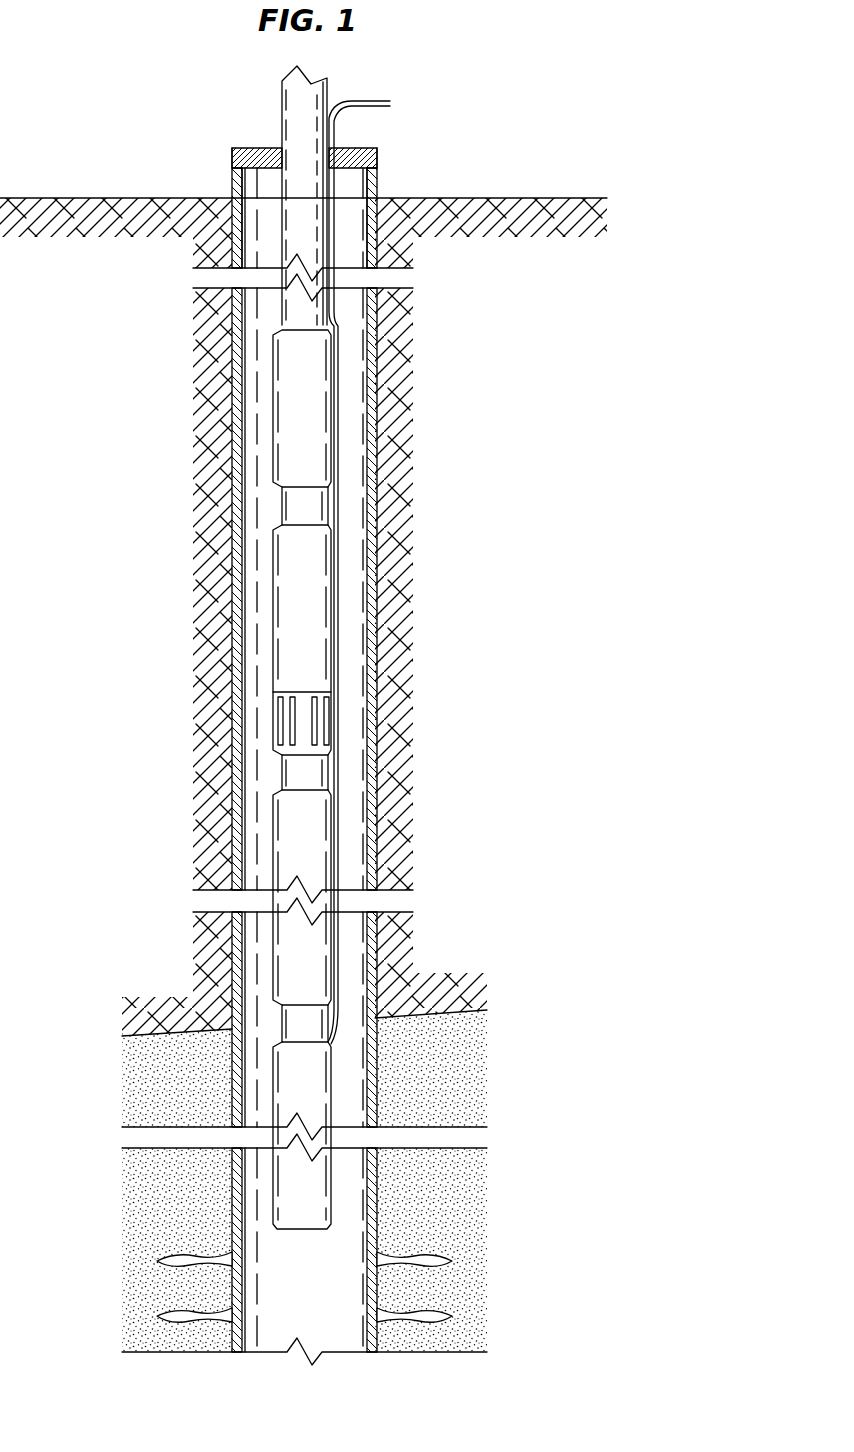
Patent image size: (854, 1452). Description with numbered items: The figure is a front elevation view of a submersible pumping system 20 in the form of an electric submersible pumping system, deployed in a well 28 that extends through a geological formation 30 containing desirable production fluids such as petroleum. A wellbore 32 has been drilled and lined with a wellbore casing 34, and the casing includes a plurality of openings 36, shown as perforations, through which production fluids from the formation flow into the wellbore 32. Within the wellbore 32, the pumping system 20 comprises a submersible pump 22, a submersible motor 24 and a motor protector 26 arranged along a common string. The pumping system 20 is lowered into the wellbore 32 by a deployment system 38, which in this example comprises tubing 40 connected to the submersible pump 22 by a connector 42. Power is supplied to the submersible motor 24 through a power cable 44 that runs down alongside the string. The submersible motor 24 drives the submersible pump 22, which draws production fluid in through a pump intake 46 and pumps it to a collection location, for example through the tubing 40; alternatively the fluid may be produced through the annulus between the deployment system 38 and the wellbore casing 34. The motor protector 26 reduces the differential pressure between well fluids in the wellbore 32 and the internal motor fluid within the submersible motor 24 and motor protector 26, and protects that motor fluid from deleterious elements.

The submersible pumping system 20 is at (434, 600).
The submersible pump 22 is at (291, 619).
The submersible motor 24 is at (291, 1094).
The motor protector 26 is at (291, 854).
The well 28 is at (389, 815).
The geological formation 30 is at (448, 1205).
The wellbore 32 is at (260, 590).
The wellbore casing 34 is at (232, 715).
The openings 36 is at (157, 1316).
The deployment system 38 is at (270, 136).
The tubing 40 is at (282, 98).
The connector 42 is at (291, 422).
The power cable 44 is at (364, 100).
The pump intake 46 is at (320, 720).